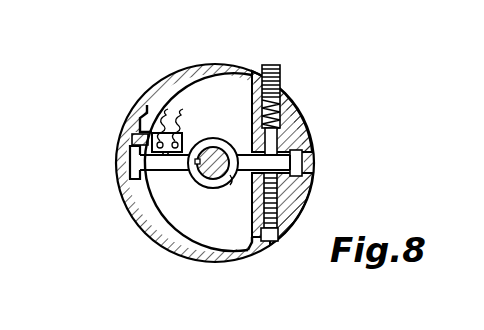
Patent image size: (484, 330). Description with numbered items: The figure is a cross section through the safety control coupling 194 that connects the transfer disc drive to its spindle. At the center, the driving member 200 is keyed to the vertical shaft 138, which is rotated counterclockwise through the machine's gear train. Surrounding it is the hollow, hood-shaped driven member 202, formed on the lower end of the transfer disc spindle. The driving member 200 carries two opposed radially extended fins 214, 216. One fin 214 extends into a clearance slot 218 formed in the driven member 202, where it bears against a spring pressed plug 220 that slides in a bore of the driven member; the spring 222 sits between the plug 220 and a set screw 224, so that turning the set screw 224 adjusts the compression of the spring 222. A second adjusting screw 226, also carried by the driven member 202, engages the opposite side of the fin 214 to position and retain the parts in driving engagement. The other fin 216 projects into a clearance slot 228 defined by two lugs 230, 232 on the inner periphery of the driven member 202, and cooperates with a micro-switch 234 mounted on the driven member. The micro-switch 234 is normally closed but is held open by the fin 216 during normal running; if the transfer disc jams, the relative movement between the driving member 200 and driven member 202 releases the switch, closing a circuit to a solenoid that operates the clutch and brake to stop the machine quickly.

The valve assembly 194 is at (113, 75).
The driven member 202 is at (208, 65).
The spring 222 is at (287, 100).
The spring pressed plug 220 is at (303, 132).
The clearance slot 218 is at (292, 150).
The set screw 224 is at (282, 70).
The second adjusting screw 226 is at (277, 207).
The radially extended fin 216 is at (148, 161).
The radially extended fin 214 is at (292, 163).
The lug 232 is at (140, 174).
The clearance slot 228 is at (135, 152).
The lug 230 is at (146, 139).
The micro-switch 234 is at (183, 136).
The vertical shaft 138 is at (205, 171).
The driving member 200 is at (168, 195).